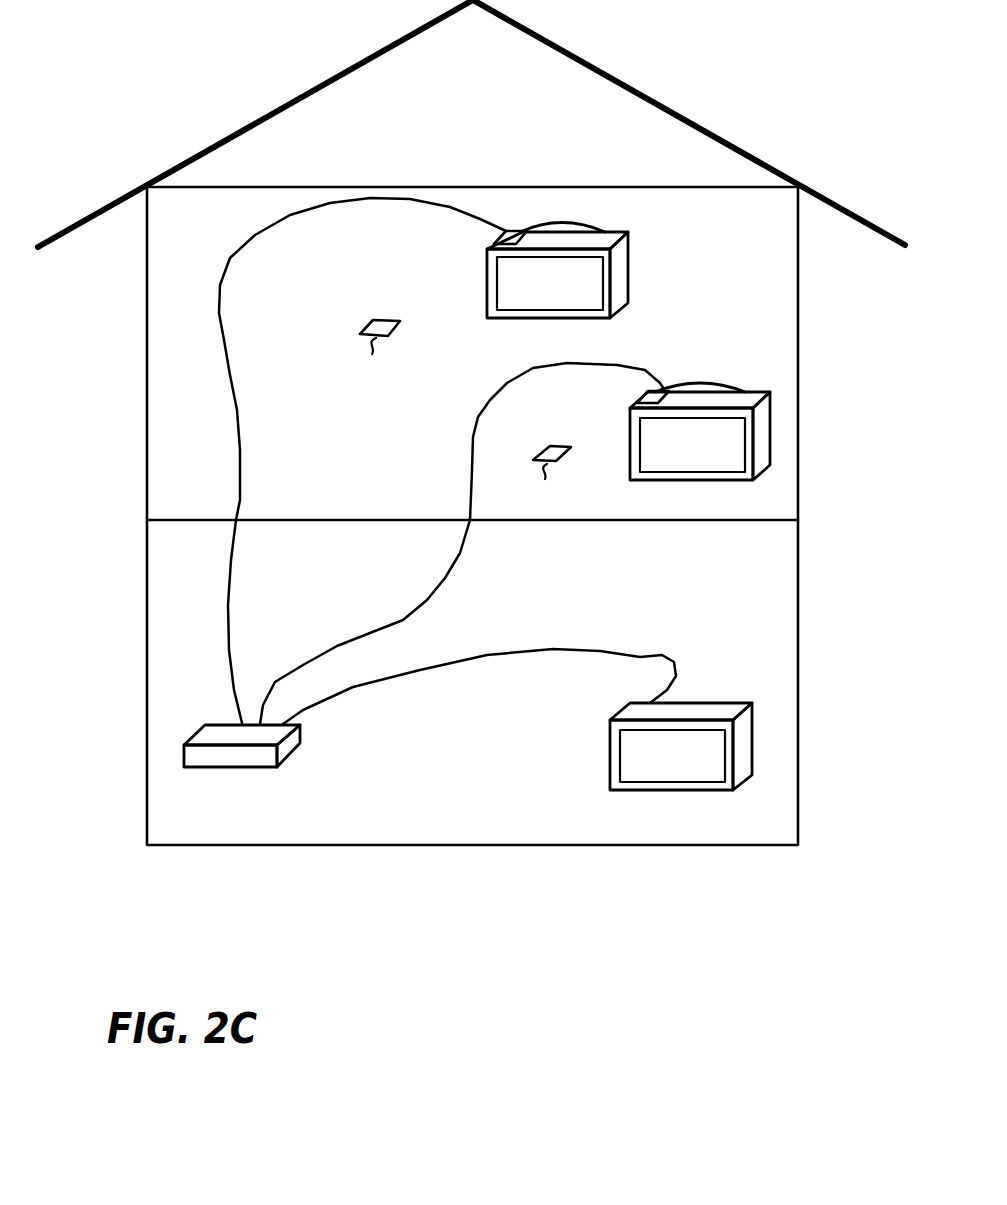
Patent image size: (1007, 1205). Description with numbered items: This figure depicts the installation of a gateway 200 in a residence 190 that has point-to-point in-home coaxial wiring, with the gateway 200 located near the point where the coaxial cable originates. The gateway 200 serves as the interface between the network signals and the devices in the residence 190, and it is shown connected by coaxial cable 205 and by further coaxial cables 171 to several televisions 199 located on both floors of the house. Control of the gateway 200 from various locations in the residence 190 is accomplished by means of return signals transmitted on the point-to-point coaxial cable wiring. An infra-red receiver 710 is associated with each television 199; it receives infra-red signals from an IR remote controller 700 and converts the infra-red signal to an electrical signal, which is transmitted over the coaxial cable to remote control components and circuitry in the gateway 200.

The cable 171 is at (240, 502).
The residence 190 is at (640, 846).
The television 199 is at (638, 270).
The gateway 200 is at (222, 768).
The coaxial cable 205 is at (652, 657).
The IR remote controller 700 is at (429, 414).
The infra-red (IR) receiver 710 is at (492, 238).